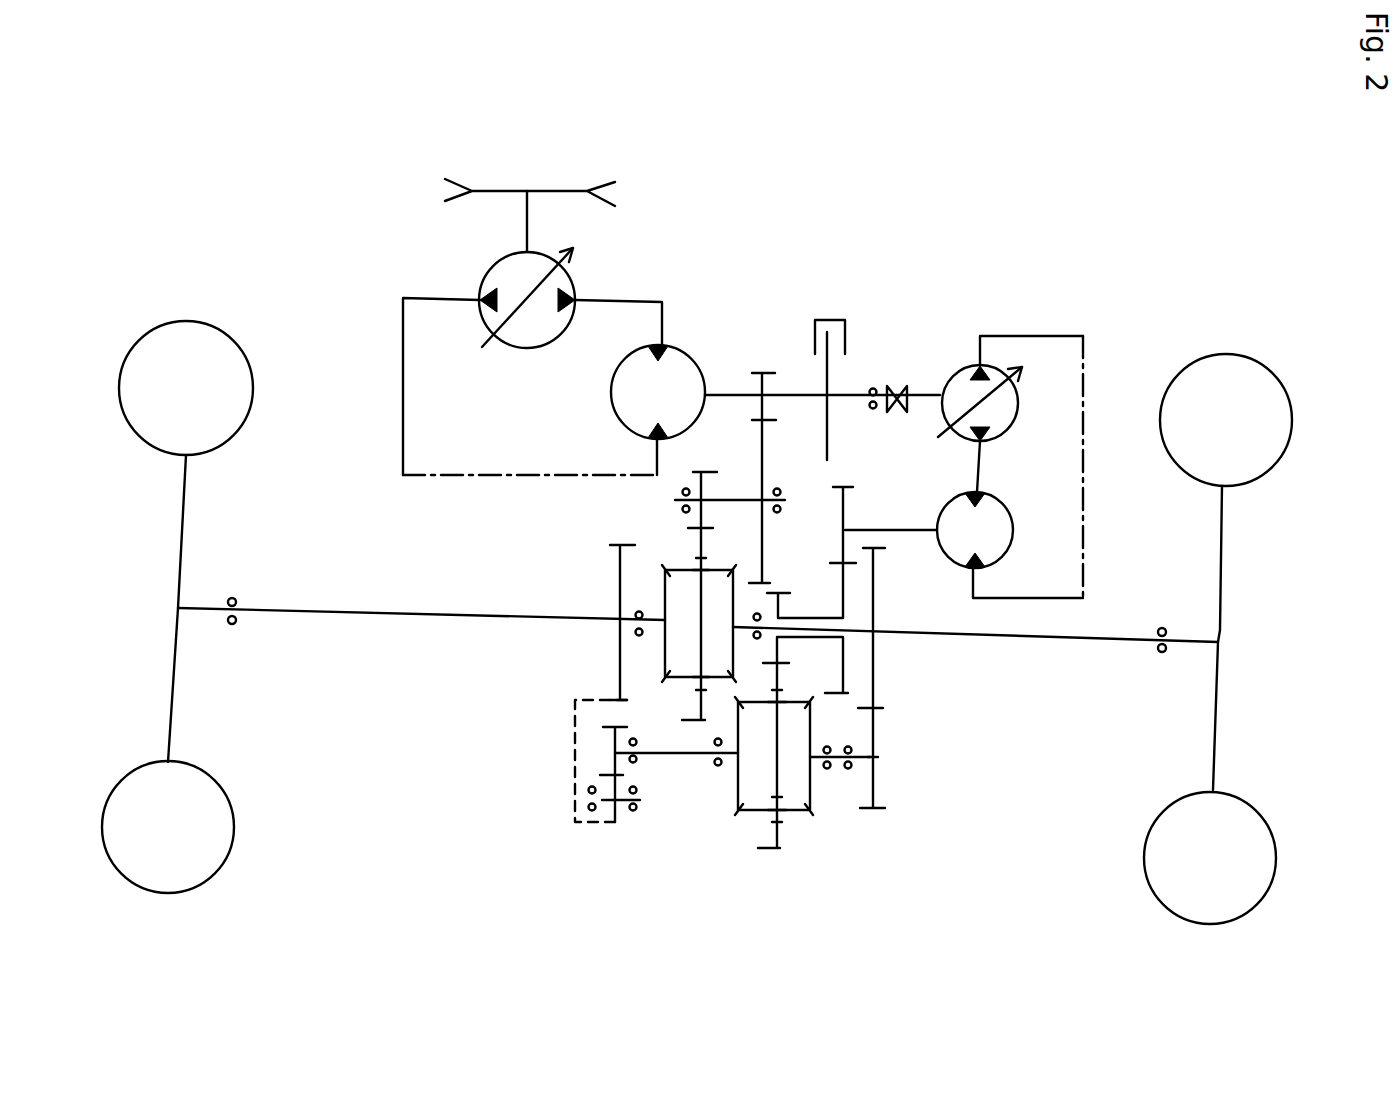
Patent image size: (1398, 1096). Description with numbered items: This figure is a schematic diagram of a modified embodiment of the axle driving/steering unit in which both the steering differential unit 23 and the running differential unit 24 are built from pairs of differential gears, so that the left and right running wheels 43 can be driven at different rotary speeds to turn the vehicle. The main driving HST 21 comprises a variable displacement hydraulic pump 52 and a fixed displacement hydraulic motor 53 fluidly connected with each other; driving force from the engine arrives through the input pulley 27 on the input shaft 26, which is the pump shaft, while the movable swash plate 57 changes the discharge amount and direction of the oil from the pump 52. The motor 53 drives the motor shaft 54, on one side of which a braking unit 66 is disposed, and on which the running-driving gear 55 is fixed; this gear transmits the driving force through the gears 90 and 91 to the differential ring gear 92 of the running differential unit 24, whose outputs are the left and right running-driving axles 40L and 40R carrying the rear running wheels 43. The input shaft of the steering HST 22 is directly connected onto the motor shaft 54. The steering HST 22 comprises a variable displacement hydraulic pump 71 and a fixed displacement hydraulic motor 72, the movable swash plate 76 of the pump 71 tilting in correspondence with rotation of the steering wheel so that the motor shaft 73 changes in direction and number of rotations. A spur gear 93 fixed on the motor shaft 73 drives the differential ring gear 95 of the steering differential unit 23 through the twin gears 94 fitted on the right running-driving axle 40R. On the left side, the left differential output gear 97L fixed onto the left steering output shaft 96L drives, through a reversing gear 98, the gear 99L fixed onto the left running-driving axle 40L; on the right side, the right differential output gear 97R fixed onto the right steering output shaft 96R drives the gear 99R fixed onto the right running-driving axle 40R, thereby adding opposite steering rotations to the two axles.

The main driving HST 21 is at (491, 321).
The steering HST 22 is at (1000, 430).
The steering differential unit 23 is at (737, 847).
The running differential unit 24 is at (650, 524).
The input shaft 26 is at (527, 220).
The input pulley 27 is at (454, 179).
The left running-driving axle 40L is at (330, 613).
The right running-driving axle 40R is at (1030, 638).
The rear running wheel 43 is at (186, 321).
The variable displacement hydraulic pump 52 is at (518, 296).
The fixed displacement hydraulic motor 53 is at (611, 394).
The motor shaft 54 is at (720, 384).
The running-driving gear 55 is at (762, 362).
The movable swash plate 57 is at (566, 254).
The braking unit 66 is at (836, 302).
The variable displacement hydraulic pump 71 is at (991, 360).
The fixed displacement hydraulic motor 72 is at (1010, 542).
The motor shaft 73 is at (898, 527).
The movable swash plate 76 is at (1022, 373).
The gear 90 is at (765, 432).
The gear 91 is at (700, 470).
The differential ring gear 92 is at (703, 718).
The spur gear 93 is at (845, 483).
The twin gears 94 is at (838, 580).
The differential ring gear 95 is at (773, 852).
The left steering output shaft 96L is at (665, 757).
The right steering output shaft 96R is at (840, 775).
The left differential output gear 97L is at (611, 737).
The right differential output gear 97R is at (870, 780).
The reversing gear 98 is at (617, 818).
The gear 99L is at (617, 663).
The gear 99R is at (873, 663).